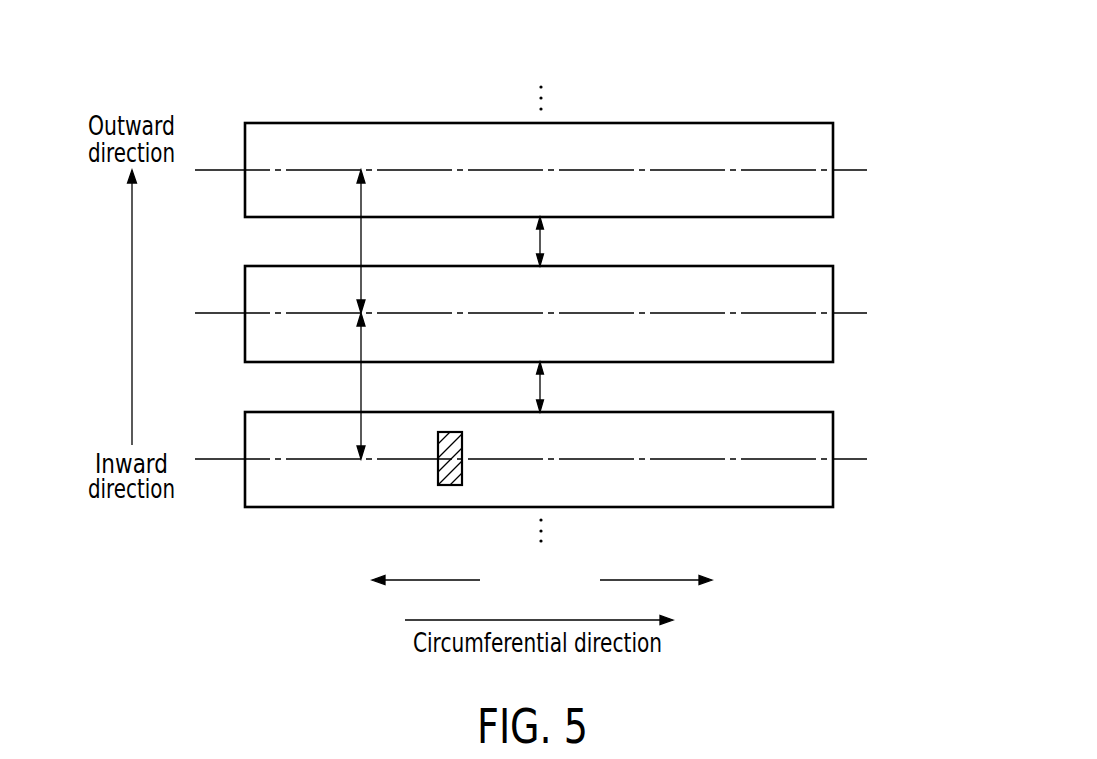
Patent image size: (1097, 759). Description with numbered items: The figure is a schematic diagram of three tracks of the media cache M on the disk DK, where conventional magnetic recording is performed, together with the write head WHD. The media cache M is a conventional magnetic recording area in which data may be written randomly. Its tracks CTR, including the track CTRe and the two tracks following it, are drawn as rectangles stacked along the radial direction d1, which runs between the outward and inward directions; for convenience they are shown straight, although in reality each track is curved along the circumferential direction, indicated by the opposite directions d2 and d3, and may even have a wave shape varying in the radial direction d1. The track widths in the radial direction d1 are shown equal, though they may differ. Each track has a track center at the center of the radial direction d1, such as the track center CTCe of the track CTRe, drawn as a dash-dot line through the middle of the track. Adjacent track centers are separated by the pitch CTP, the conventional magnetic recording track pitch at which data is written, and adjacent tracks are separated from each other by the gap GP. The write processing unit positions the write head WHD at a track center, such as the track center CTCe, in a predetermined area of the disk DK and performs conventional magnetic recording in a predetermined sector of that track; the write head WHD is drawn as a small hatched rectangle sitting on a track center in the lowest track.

The disk DK is at (866, 64).
The media cache M is at (854, 102).
The track CTRe is at (815, 140).
The track center CTCe is at (751, 168).
The pitch CTP is at (360, 243).
The gap GP is at (545, 242).
The write head WHD is at (451, 486).
The radial direction d1 is at (118, 307).
The circumferential direction d2 is at (671, 580).
The circumferential direction d3 is at (411, 580).